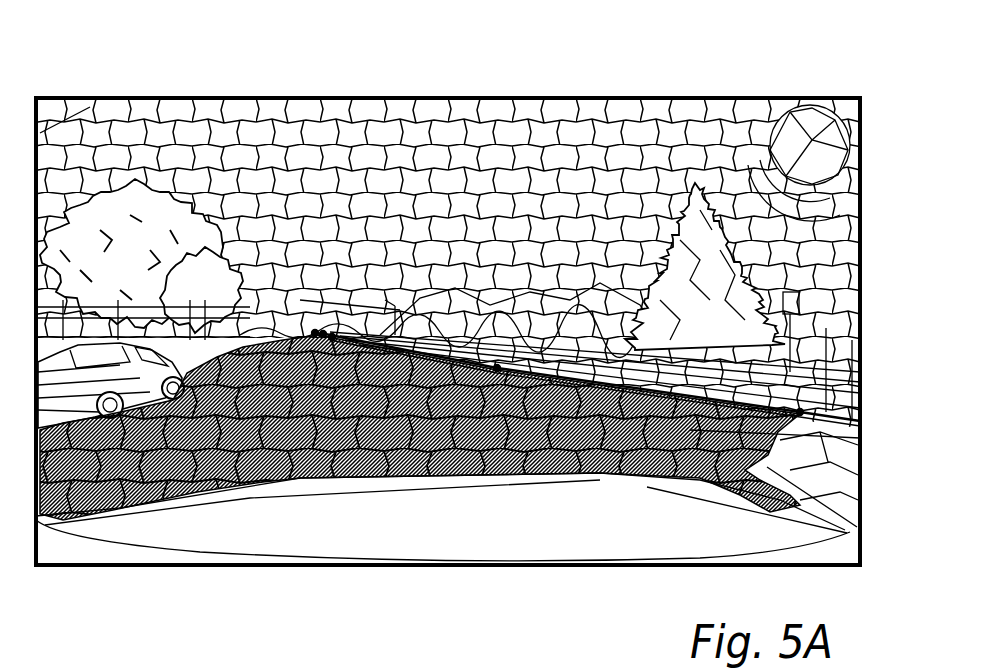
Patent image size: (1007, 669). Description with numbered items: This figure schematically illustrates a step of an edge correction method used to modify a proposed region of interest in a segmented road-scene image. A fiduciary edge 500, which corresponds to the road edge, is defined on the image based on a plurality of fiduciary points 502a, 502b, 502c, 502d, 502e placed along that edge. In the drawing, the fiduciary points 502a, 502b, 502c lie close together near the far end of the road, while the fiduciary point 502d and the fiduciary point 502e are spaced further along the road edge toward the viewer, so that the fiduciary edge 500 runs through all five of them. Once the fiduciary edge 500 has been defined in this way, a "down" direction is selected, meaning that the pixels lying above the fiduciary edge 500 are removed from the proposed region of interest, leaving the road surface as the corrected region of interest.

The fiduciary edge 500 is at (443, 353).
The fiduciary point 502a is at (315, 333).
The fiduciary point 502b is at (323, 334).
The fiduciary point 502c is at (332, 337).
The fiduciary point 502d is at (497, 368).
The fiduciary point 502e is at (800, 412).